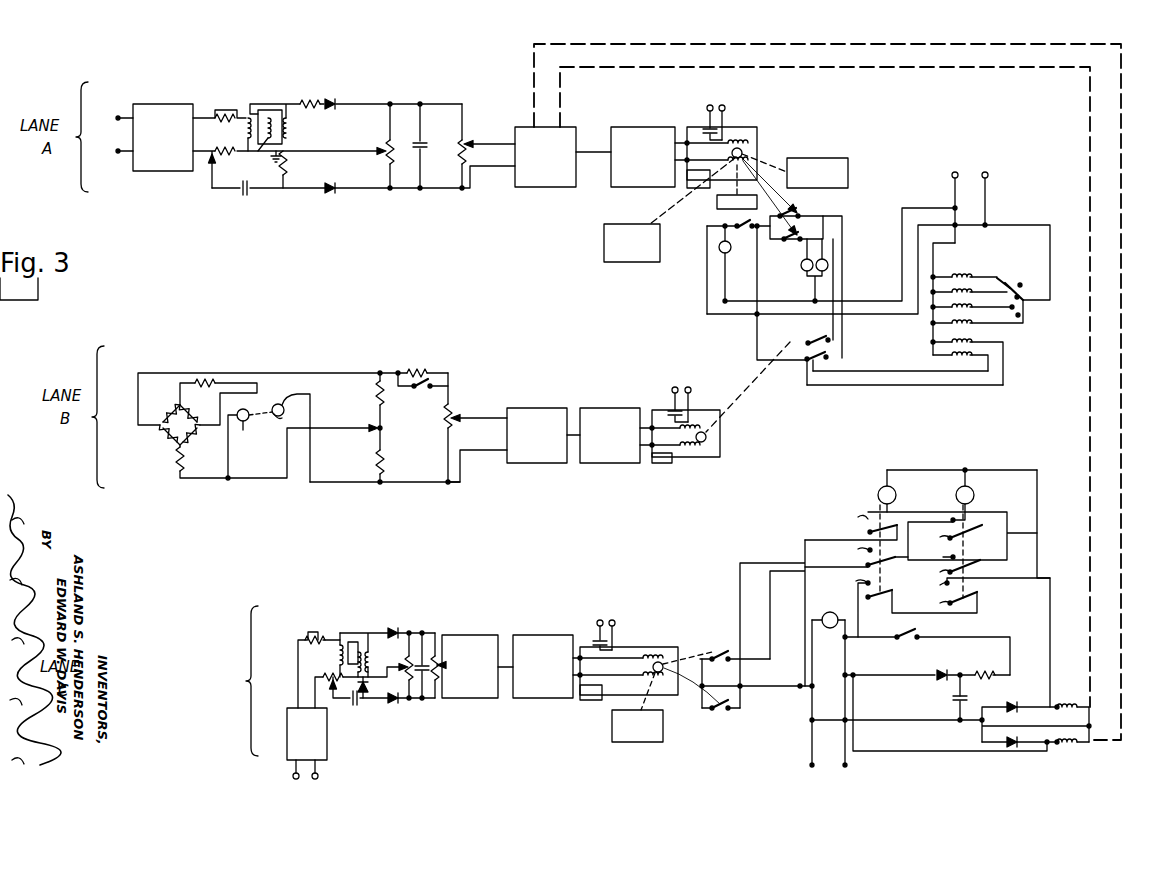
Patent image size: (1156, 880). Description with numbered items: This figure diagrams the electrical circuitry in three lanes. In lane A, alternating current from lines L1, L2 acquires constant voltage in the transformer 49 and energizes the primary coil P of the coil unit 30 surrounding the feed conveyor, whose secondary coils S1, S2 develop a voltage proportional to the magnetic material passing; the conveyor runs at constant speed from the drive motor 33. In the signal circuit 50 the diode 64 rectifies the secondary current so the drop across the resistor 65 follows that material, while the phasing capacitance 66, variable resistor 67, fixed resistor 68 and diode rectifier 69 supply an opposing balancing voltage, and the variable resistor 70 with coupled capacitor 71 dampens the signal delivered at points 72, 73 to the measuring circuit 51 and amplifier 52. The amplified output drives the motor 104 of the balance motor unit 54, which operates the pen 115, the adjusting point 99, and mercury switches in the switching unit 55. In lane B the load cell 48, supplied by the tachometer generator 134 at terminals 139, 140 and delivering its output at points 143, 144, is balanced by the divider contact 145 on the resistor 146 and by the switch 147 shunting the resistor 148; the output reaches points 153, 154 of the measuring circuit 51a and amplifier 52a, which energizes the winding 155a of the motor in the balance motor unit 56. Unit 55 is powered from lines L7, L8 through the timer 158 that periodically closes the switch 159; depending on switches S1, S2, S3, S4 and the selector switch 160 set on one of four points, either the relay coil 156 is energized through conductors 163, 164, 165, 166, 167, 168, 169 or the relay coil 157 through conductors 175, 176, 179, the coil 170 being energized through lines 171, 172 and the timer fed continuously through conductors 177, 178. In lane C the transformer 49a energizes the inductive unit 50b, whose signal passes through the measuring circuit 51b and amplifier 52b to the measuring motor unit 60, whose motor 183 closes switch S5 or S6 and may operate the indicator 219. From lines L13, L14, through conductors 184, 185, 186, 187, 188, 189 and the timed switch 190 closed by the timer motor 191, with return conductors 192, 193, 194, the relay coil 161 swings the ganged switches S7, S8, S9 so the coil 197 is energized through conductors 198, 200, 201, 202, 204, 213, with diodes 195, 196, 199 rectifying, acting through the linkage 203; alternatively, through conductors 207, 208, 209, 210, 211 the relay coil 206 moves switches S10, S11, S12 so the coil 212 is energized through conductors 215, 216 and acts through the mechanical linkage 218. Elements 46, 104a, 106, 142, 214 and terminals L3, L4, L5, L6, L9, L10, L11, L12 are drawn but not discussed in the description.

The coil unit 30 is at (244, 128).
The main conveyor drive motor 33 is at (286, 404).
The transformer 46 is at (355, 626).
The load cell unit 48 is at (174, 437).
The constant voltage transformer 49 is at (174, 99).
The constant voltage transformer 49a is at (327, 738).
The signal circuit 50 is at (437, 131).
The inductive coupling unit 50b is at (393, 629).
The measuring circuit 51 is at (539, 174).
The measuring circuit 51a is at (532, 408).
The measuring circuit 51b is at (474, 635).
The amplifier 52 is at (646, 190).
The amplifier 52a is at (606, 408).
The amplifier 52b is at (536, 635).
The balance motor unit 54 is at (737, 134).
The switching unit 55 is at (858, 314).
The balance motor unit 56 is at (710, 415).
The measuring motor unit 60 is at (625, 649).
The diode 64 is at (328, 100).
The resistor 65 is at (388, 142).
The phasing capacitance 66 is at (247, 198).
The variable resistor 67 is at (289, 167).
The fixed resistor 68 is at (285, 163).
The diode rectifier 69 is at (336, 184).
The variable resistor 70 is at (468, 144).
The coupled capacitor 71 is at (422, 144).
The signal point 72 is at (515, 144).
The signal point 73 is at (515, 166).
The movable adjusting point 99 is at (604, 242).
The balancing motor 104 is at (757, 154).
The relay coil 104a is at (757, 134).
The mechanism of Fig. 5 106 is at (840, 158).
The pen 115 is at (717, 207).
The tachometer generator 134 is at (250, 443).
The terminal 139 is at (218, 402).
The terminal 140 is at (183, 448).
The bridge resistor 142 is at (178, 393).
The output point 143 is at (159, 431).
The output point 144 is at (200, 426).
The movable divider contact 145 is at (372, 430).
The resistor 146 is at (384, 429).
The switch 147 is at (426, 391).
The resistor 148 is at (424, 372).
The input point 153 is at (490, 410).
The input point 154 is at (504, 456).
The motor winding 155a is at (720, 426).
The relay coil 156 is at (976, 340).
The relay coil 157 is at (965, 358).
The timer 158 is at (730, 254).
The timer switch 159 is at (739, 219).
The selector switch 160 is at (1032, 306).
The relay coil 161 is at (880, 490).
The conductor 163 is at (953, 196).
The conductor 164 is at (1002, 268).
The conductor 165 is at (1008, 362).
The conductor 166 is at (843, 266).
The conductor 167 is at (822, 213).
The conductor 168 is at (707, 262).
The conductor 169 is at (987, 196).
The coil 170 is at (962, 275).
The line 171 is at (996, 277).
The line 172 is at (1051, 259).
The conductor 175 is at (912, 368).
The conductor 176 is at (786, 240).
The conductor 177 is at (879, 291).
The conductor 178 is at (839, 255).
The conductor 179 is at (834, 309).
The motor 183 is at (646, 678).
The conductor 184 is at (806, 713).
The conductor 185 is at (747, 687).
The conductor 186 is at (780, 560).
The conductor 187 is at (962, 577).
The conductor 188 is at (928, 470).
The conductor 189 is at (1010, 470).
The timed switch 190 is at (910, 636).
The timer motor 191 is at (832, 612).
The conductor 192 is at (860, 636).
The conductor 193 is at (847, 652).
The conductor 194 is at (846, 699).
The rectifier 195 is at (932, 673).
The diode 196 is at (1014, 702).
The coil 197 is at (1062, 749).
The conductor 198 is at (1008, 652).
The diode 199 is at (1009, 748).
The conductor 200 is at (979, 729).
The conductor 201 is at (1092, 743).
The conductor 202 is at (1035, 713).
The linkage line 203 is at (1120, 605).
The conductor 204 is at (884, 677).
The relay coil 206 is at (980, 461).
The conductor 207 is at (804, 688).
The conductor 208 is at (702, 708).
The conductor 209 is at (740, 585).
The conductor 210 is at (912, 556).
The conductor 211 is at (960, 499).
The coil 212 is at (1066, 704).
The conductor 213 is at (920, 717).
The rectifier 214 is at (1008, 706).
The conductor 215 is at (977, 606).
The conductor 216 is at (1050, 648).
The mechanical linkage 218 is at (1090, 574).
The indicator 219 is at (612, 727).
The supply line L1 is at (121, 117).
The supply line L2 is at (122, 153).
The line terminal L3 is at (290, 772).
The line terminal L4 is at (318, 773).
The line terminal L5 is at (703, 111).
The line terminal L6 is at (738, 94).
The supply line L7 is at (950, 175).
The supply line L8 is at (982, 176).
The line terminal L9 is at (670, 390).
The line terminal L10 is at (692, 390).
The line terminal L11 is at (600, 621).
The line terminal L12 is at (614, 621).
The supply line L13 is at (809, 765).
The supply line L14 is at (845, 767).
The primary coil P is at (266, 148).
The secondary coil S1 is at (789, 214).
The secondary coil S2 is at (798, 239).
The normally closed switch S3 is at (813, 339).
The normally closed switch S4 is at (828, 356).
The switch S5 is at (724, 647).
The switch S6 is at (732, 715).
The ganged switch S7 is at (858, 522).
The ganged switch S8 is at (852, 551).
The ganged switch S9 is at (859, 582).
The ganged switch S10 is at (962, 513).
The ganged switch S11 is at (964, 556).
The ganged switch S12 is at (983, 589).